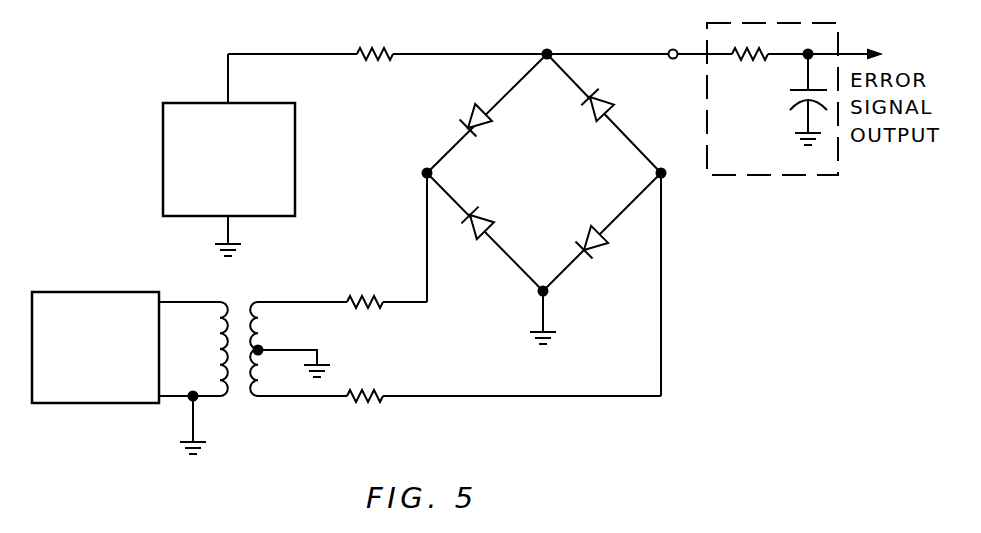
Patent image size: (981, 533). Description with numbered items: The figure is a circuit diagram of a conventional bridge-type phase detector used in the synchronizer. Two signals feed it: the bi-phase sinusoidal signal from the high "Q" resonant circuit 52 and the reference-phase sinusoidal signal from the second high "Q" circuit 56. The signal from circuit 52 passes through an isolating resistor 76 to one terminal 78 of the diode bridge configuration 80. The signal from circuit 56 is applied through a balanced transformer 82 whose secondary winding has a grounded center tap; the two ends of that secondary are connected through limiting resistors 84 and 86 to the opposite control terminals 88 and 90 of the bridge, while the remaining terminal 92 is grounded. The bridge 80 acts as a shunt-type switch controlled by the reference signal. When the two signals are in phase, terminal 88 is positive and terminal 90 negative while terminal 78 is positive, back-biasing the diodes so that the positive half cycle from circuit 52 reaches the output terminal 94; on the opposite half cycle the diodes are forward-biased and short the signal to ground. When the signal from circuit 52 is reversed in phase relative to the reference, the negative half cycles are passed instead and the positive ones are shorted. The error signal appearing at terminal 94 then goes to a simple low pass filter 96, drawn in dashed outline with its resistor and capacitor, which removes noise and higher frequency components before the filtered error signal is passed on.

The high "Q" resonant circuit 52 is at (229, 179).
The second high "Q" circuit 56 is at (126, 373).
The isolating resistor 76 is at (378, 46).
The terminal 78 is at (549, 49).
The diode bridge configuration 80 is at (543, 175).
The balanced transformer 82 is at (232, 313).
The limiting resistor 84 is at (357, 296).
The limiting resistor 86 is at (377, 389).
The terminal 88 is at (425, 170).
The terminal 90 is at (663, 170).
The terminal 92 is at (550, 292).
The output terminal 94 is at (673, 49).
The low pass filter 96 is at (760, 97).